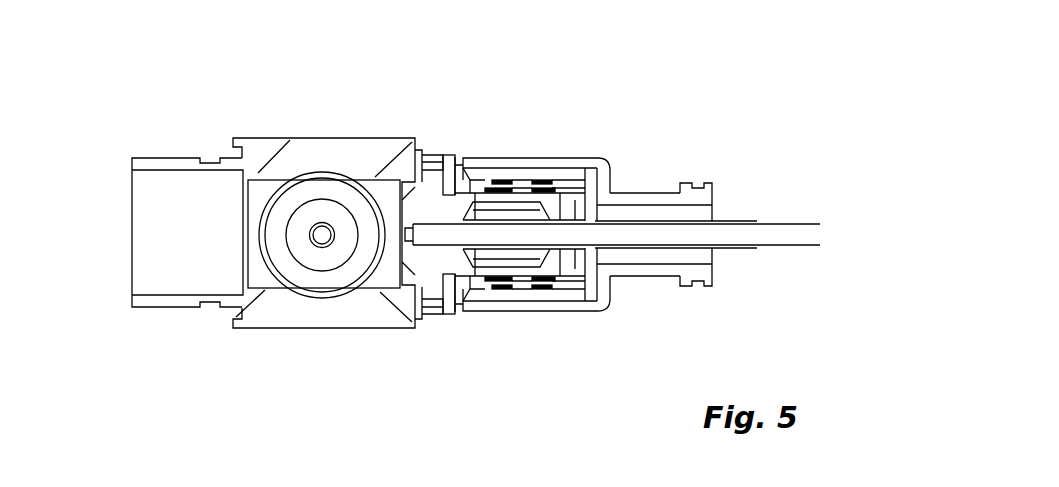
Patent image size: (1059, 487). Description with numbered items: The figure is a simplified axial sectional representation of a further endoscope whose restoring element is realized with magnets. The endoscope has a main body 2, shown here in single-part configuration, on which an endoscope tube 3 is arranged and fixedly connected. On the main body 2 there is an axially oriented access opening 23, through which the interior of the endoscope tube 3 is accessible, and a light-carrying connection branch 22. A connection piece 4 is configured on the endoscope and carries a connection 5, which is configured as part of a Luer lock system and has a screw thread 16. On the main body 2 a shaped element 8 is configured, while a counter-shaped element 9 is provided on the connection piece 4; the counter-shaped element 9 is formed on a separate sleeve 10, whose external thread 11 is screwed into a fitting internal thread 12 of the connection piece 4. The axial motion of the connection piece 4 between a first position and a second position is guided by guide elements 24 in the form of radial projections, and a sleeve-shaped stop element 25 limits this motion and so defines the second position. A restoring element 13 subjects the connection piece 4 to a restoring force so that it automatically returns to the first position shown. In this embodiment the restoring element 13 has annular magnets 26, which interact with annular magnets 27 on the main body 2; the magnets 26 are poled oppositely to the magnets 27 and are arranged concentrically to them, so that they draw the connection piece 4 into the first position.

The main body 2 is at (270, 152).
The endoscope tube 3 is at (773, 221).
The connection piece 4 is at (580, 165).
The connection 5 is at (693, 163).
The shaped element 8 is at (427, 307).
The counter-shaped element 9 is at (440, 312).
The sleeve 10 is at (478, 300).
The external thread 11 is at (540, 165).
The internal thread 12 is at (490, 172).
The restoring element 13 is at (555, 166).
The screw thread 16 is at (702, 288).
The light-carrying connection branch 22 is at (319, 190).
The access opening 23 is at (160, 232).
The guide elements 24 is at (575, 280).
The stop element 25 is at (520, 288).
The annular magnets 26 is at (528, 178).
The annular magnets 27 is at (497, 307).